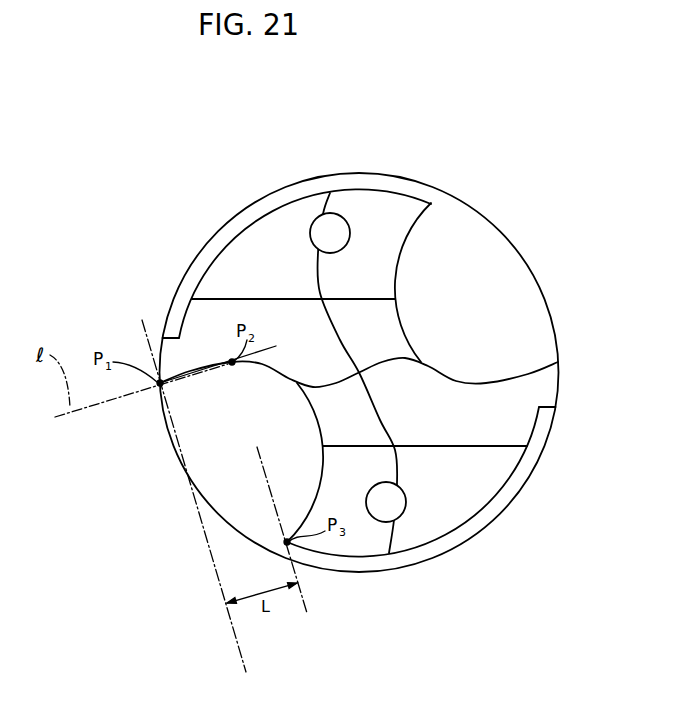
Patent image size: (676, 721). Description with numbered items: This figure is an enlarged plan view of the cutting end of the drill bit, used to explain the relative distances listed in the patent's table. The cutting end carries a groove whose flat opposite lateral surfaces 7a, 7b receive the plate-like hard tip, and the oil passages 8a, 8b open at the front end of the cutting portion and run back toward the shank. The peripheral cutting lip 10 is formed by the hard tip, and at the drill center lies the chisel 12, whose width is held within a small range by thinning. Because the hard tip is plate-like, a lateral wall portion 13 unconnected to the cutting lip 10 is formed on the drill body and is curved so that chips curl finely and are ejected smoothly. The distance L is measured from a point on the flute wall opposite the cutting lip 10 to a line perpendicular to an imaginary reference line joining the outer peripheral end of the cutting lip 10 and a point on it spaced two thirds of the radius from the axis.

The lateral surface of groove 7a is at (233, 298).
The lateral surface of groove 7b is at (485, 447).
The oil passage 8a is at (337, 233).
The oil passage 8b is at (397, 508).
The cutting lip 10 is at (195, 362).
The chisel 12 is at (357, 370).
The lateral wall portion 13 is at (317, 485).